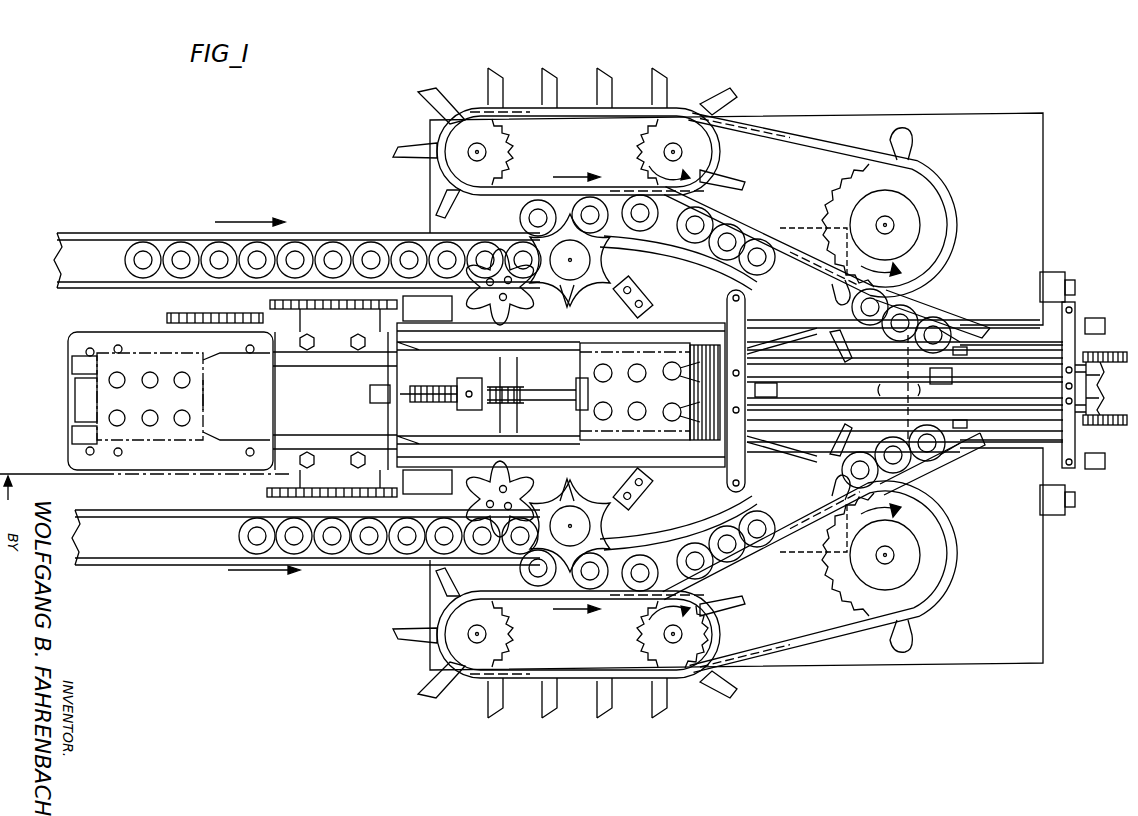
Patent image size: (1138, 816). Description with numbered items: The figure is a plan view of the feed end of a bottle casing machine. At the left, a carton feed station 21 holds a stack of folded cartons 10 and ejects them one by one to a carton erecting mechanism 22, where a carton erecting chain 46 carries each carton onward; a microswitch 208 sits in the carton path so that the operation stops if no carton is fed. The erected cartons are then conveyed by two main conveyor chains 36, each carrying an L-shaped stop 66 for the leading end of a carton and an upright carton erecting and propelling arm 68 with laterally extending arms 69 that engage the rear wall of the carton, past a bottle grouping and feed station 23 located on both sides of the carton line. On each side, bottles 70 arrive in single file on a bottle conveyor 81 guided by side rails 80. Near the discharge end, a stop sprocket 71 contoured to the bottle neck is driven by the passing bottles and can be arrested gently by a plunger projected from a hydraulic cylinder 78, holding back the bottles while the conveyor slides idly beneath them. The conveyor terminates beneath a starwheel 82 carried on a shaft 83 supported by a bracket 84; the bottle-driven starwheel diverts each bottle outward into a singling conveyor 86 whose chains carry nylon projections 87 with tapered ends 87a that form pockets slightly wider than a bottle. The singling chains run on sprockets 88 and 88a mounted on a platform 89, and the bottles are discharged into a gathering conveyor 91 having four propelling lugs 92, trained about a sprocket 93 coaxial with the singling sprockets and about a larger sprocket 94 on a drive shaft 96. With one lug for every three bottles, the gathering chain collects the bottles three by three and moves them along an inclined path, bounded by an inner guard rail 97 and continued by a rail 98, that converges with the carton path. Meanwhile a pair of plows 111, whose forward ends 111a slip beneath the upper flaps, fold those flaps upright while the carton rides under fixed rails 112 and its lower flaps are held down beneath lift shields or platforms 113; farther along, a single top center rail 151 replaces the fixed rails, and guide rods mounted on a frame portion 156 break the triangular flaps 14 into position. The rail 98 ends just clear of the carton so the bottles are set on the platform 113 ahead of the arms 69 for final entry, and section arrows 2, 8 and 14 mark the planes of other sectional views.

The carton 10 is at (140, 352).
The section line 2 is at (568, 408).
The section line 8 is at (904, 352).
The triangular flaps 14 is at (660, 532).
The carton feed station 21 is at (55, 398).
The carton erecting mechanism 22 is at (450, 405).
The bottle grouping and feed station 23 is at (740, 86).
The main conveyor chains 36 is at (1110, 378).
The carton erecting chain 46 is at (437, 388).
The L-shaped stop 66 is at (972, 350).
The carton erecting and propelling arm 68 is at (836, 336).
The laterally extending arms 69 is at (748, 310).
The bottles 70 is at (180, 243).
The upper sprocket 71 is at (515, 300).
The hydraulic cylinder 78 is at (440, 318).
The side rails 80 is at (90, 288).
The single file bottle conveyors 81 is at (72, 263).
The starwheel 82 is at (572, 288).
The shaft 83 is at (578, 260).
The bracket 84 is at (640, 300).
The singling conveyor 86 is at (597, 108).
The nylon projections 87 is at (440, 98).
The tapered ends 87a is at (435, 92).
The idler and driving sprockets 88 is at (498, 150).
The driving sprocket 88a is at (643, 136).
The platform 89 is at (432, 190).
The gathering conveyor 91 is at (800, 640).
The propelling lugs 92 is at (908, 142).
The sprocket 93 is at (645, 617).
The larger sprocket 94 is at (838, 204).
The drive shaft 96 is at (888, 222).
The inner guard rail 97 is at (706, 268).
The rail 98 is at (940, 316).
The plows 111 is at (782, 393).
The forward ends 111a is at (716, 442).
The fixed rails 112 is at (970, 372).
The lift shield or platform 113 is at (962, 332).
The top center rail 151 is at (1058, 372).
The frame portion 156 is at (778, 390).
The microswitch 208 is at (370, 392).